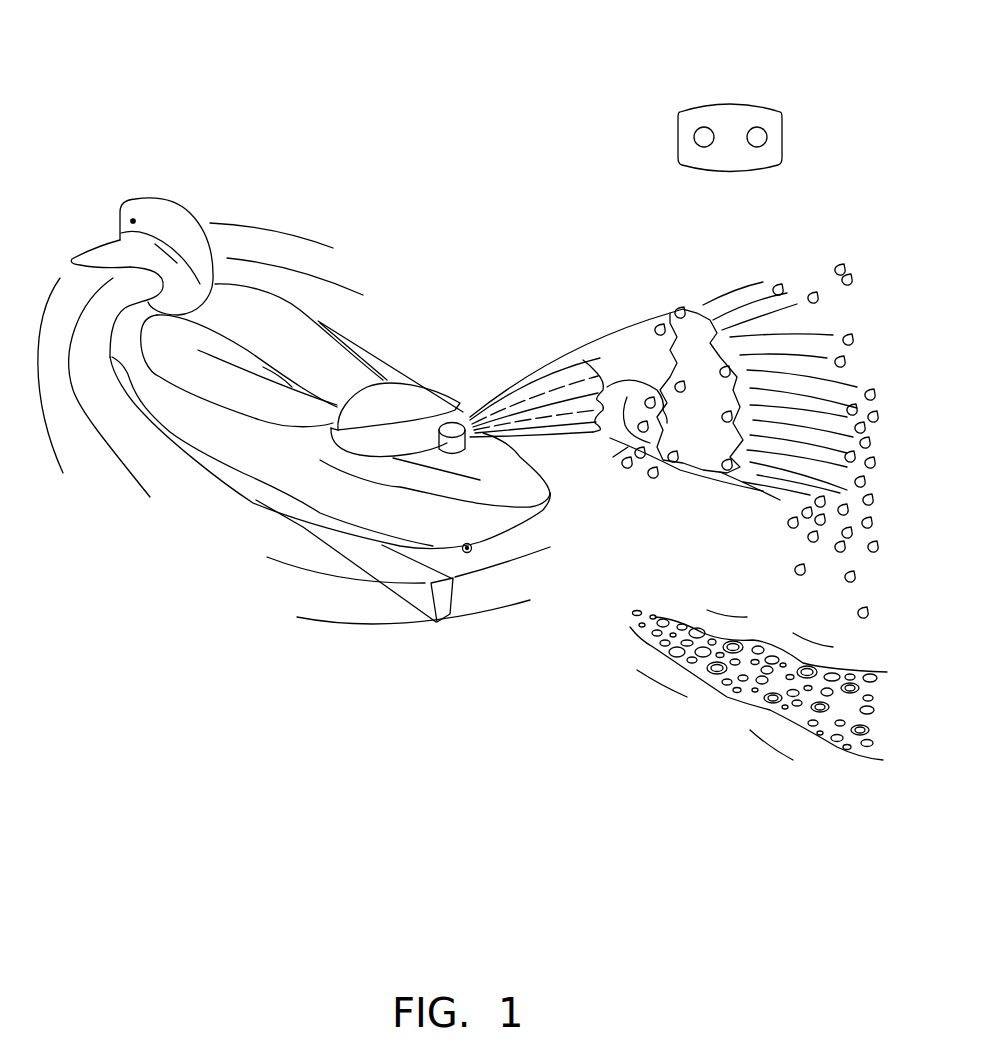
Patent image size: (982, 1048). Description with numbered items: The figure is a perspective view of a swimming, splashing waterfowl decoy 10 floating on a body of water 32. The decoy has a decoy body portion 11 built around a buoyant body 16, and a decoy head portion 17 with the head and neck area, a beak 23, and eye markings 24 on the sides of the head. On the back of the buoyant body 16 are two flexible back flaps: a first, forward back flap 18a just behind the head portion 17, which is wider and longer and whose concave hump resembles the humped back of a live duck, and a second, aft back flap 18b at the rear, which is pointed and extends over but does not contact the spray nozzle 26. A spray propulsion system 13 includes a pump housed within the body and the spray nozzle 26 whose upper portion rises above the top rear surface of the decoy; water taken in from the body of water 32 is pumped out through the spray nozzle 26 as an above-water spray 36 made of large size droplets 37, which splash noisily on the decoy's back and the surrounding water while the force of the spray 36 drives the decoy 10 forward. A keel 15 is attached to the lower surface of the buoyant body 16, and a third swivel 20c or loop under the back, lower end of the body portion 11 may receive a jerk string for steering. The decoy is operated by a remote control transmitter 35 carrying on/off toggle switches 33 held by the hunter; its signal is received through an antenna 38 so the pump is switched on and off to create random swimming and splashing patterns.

The waterfowl decoy 10 is at (562, 170).
The decoy body portion 11 is at (153, 543).
The spray propulsion system 13 is at (475, 384).
The keel 15 is at (436, 621).
The buoyant body 16 is at (253, 503).
The decoy head portion 17 is at (183, 220).
The first, forward back flap 18a is at (295, 320).
The second, aft back flap 18b is at (399, 394).
The third swivel 20c is at (471, 553).
The beak 23 is at (94, 250).
The eye markings 24 is at (135, 220).
The spray nozzle 26 is at (456, 440).
The body of water 32 is at (620, 701).
The on/off toggle switches 33 is at (760, 132).
The remote control transmitter 35 is at (680, 110).
The water spray 36 is at (630, 308).
The large size droplets 37 is at (692, 309).
The antenna 38 is at (383, 382).